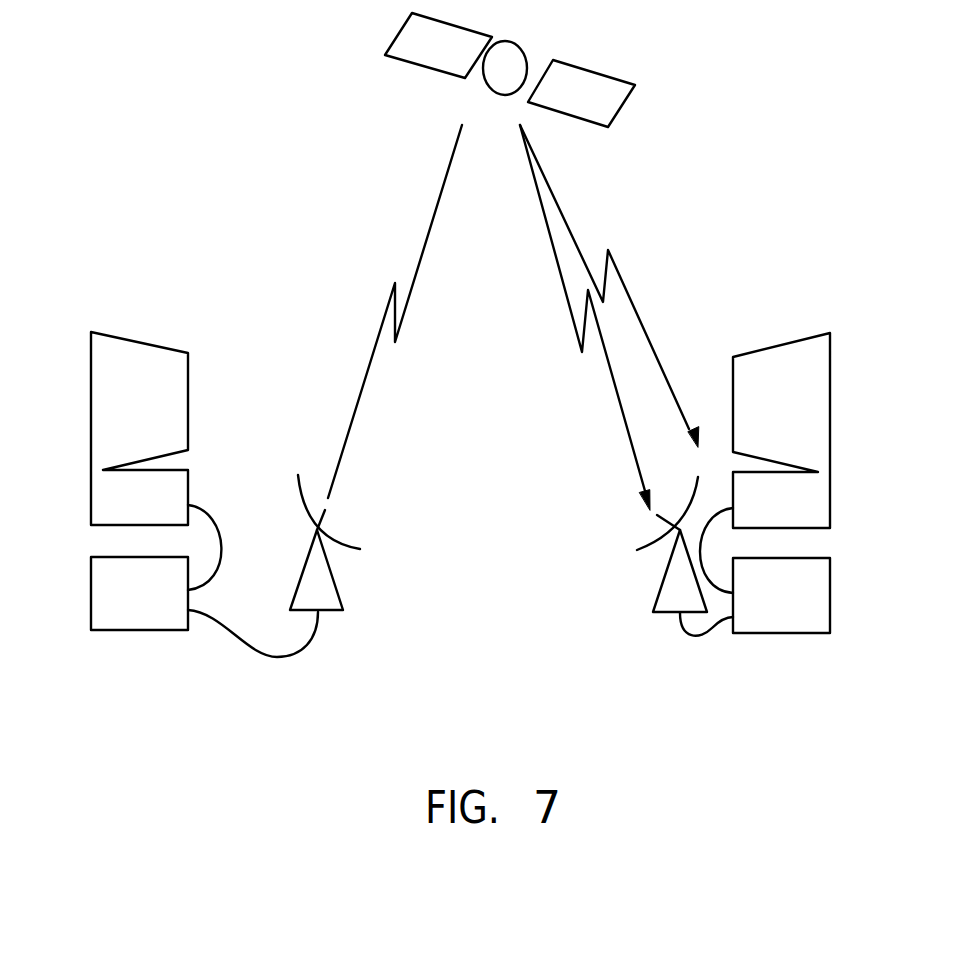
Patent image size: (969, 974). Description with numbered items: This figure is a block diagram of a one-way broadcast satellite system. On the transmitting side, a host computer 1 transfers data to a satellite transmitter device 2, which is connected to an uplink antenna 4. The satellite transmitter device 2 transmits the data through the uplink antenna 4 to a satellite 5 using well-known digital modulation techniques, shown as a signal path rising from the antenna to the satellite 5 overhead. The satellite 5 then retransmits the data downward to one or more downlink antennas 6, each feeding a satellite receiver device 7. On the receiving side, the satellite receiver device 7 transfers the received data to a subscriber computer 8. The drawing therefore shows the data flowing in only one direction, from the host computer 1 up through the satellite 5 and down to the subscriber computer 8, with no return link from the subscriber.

The host computer 1 is at (91, 430).
The satellite transmitter device 2 is at (90, 590).
The uplink antenna 4 is at (337, 580).
The satellite 5 is at (418, 68).
The downlink antenna 6 is at (658, 593).
The satellite receiver device 7 is at (832, 602).
The subscriber computer 8 is at (832, 400).